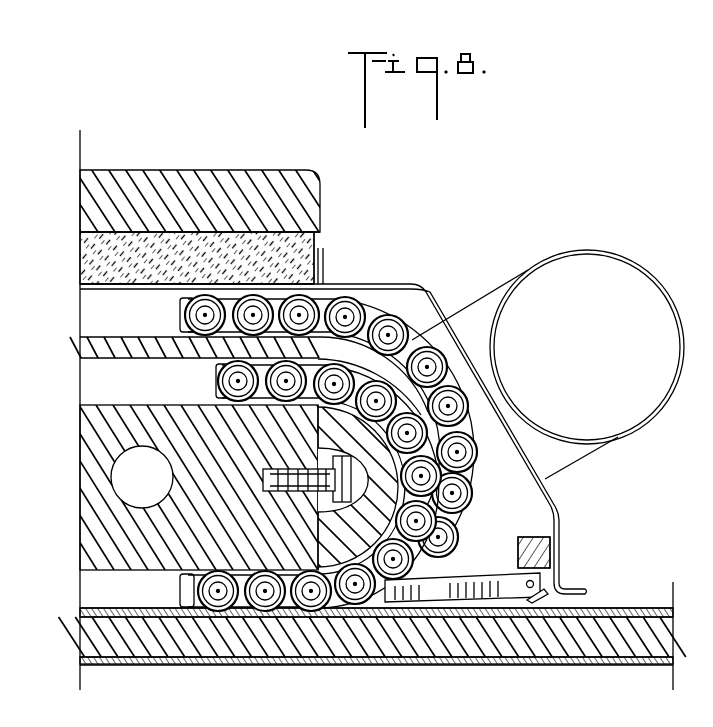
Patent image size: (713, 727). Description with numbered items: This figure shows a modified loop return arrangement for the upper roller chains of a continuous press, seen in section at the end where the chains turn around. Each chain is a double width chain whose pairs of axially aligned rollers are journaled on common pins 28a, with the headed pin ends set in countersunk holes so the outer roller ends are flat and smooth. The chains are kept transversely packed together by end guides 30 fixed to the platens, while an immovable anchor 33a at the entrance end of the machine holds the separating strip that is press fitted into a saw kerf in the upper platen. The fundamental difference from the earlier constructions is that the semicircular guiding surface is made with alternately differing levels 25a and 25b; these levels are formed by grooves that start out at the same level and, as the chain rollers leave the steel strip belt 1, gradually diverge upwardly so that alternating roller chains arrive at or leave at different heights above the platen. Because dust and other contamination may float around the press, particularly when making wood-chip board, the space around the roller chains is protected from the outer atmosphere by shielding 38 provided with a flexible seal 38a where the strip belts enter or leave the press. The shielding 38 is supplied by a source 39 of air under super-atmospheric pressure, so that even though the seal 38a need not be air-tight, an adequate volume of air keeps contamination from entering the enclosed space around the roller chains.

The steel strip belt 1 is at (636, 606).
The guiding surface level 25a is at (322, 427).
The guiding surface level 25b is at (418, 342).
The common pin 28a is at (219, 589).
The end guide 30 is at (474, 580).
The anchor 33a is at (552, 540).
The shielding 38 is at (385, 288).
The flexible seal 38a is at (548, 593).
The source of air under super-atmospheric pressure 39 is at (648, 275).